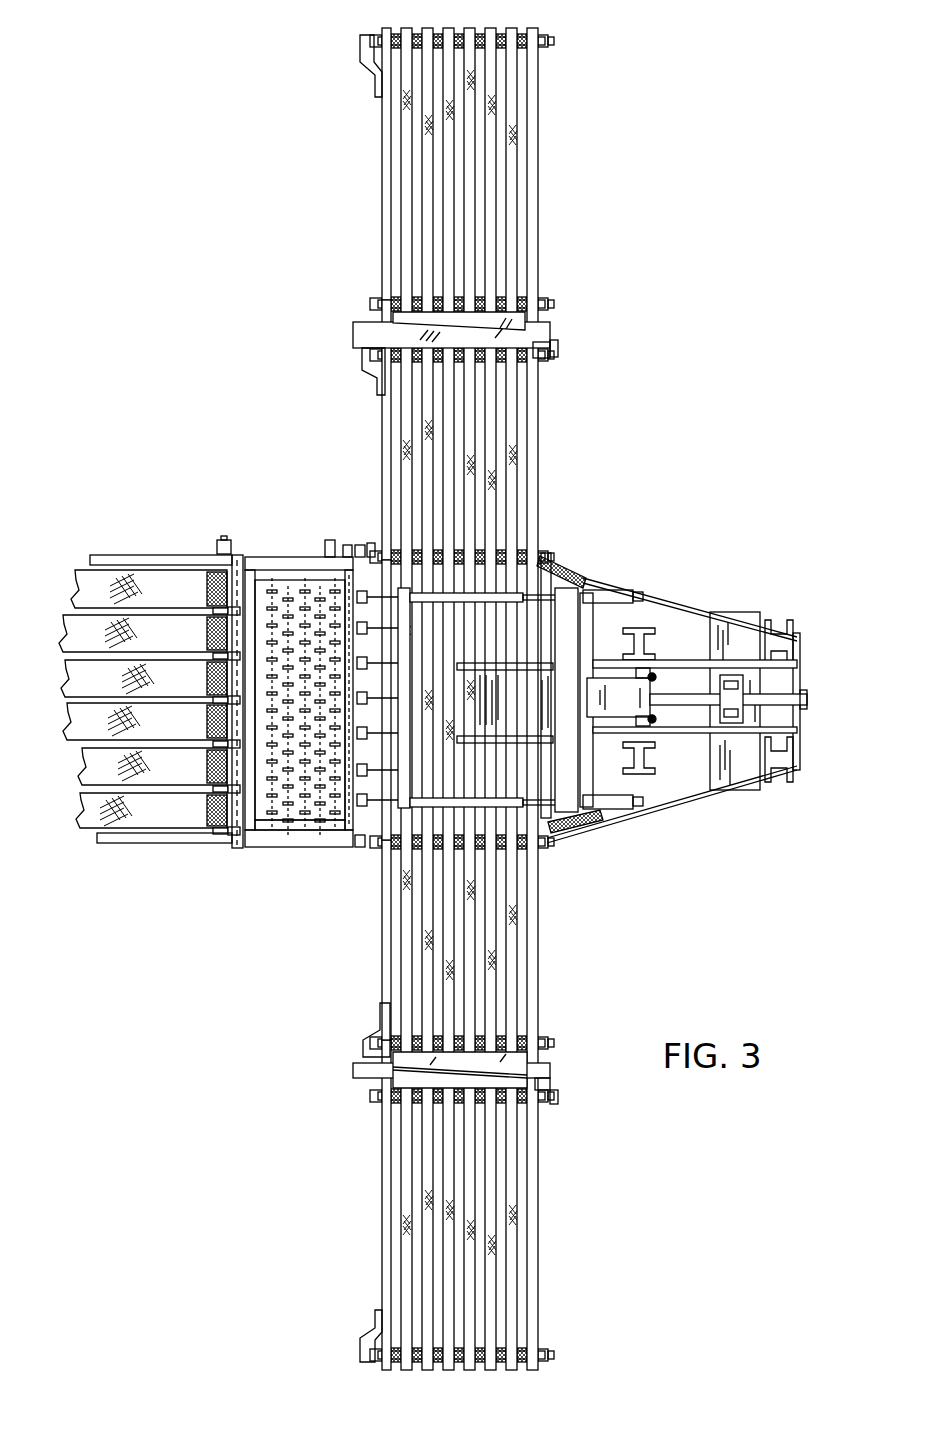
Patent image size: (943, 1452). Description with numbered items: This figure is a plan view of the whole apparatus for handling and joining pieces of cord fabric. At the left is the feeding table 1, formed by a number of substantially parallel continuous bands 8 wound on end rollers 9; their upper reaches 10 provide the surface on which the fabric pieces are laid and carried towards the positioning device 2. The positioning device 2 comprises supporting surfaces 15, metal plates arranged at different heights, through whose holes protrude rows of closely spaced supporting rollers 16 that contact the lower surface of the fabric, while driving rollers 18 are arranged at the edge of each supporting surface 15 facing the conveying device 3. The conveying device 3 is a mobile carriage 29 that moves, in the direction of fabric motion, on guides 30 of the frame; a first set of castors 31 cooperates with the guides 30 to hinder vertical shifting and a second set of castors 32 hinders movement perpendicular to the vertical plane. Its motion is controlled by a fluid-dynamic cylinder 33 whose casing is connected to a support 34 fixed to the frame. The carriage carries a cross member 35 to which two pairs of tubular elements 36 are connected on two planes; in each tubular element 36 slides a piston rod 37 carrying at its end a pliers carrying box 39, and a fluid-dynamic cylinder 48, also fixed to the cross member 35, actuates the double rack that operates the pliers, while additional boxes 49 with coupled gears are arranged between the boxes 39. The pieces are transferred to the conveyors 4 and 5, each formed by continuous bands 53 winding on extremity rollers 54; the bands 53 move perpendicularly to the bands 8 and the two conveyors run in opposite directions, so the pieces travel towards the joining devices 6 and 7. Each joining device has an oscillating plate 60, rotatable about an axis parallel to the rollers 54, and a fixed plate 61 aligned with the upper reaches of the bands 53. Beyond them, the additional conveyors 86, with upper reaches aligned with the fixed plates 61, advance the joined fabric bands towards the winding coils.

The feeding table 1 is at (130, 540).
The positioning device 2 is at (288, 518).
The conveying device 3 is at (613, 828).
The conveyor 4 is at (375, 935).
The conveyor 5 is at (375, 433).
The joining device 6 is at (560, 1075).
The joining device 7 is at (567, 322).
The continuous bands 8 is at (70, 628).
The end rollers 9 is at (187, 840).
The upper reaches 10 is at (133, 847).
The supporting surfaces 15 is at (250, 553).
The supporting rollers 16 is at (285, 575).
The driving rollers 18 is at (327, 557).
The carriage 29 is at (613, 700).
The guides 30 is at (678, 665).
The first set of castors 31 is at (653, 677).
The second set of castors 32 is at (653, 655).
The fluid-dynamic cylinder 33 is at (780, 697).
The support 34 is at (740, 680).
The cross member 35 is at (567, 643).
The tubular elements 36 is at (520, 598).
The piston rod 37 is at (385, 547).
The pliers carrying box 39 is at (367, 557).
The fluid-dynamic cylinder 48 is at (622, 595).
The box 49 is at (352, 700).
The continuous bands 53 is at (453, 117).
The extremity rollers 54 is at (525, 40).
The oscillating plate 60 is at (370, 325).
The fixed plate 61 is at (487, 315).
The conveyors 86 is at (548, 143).